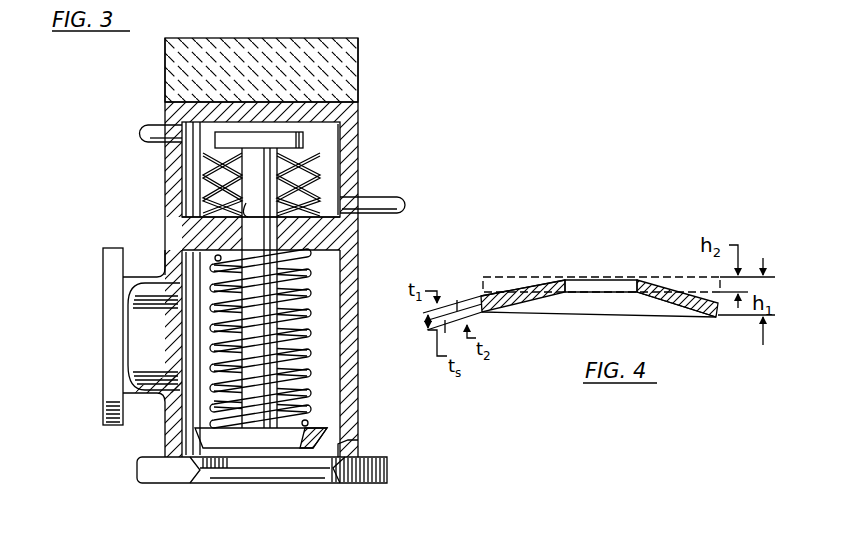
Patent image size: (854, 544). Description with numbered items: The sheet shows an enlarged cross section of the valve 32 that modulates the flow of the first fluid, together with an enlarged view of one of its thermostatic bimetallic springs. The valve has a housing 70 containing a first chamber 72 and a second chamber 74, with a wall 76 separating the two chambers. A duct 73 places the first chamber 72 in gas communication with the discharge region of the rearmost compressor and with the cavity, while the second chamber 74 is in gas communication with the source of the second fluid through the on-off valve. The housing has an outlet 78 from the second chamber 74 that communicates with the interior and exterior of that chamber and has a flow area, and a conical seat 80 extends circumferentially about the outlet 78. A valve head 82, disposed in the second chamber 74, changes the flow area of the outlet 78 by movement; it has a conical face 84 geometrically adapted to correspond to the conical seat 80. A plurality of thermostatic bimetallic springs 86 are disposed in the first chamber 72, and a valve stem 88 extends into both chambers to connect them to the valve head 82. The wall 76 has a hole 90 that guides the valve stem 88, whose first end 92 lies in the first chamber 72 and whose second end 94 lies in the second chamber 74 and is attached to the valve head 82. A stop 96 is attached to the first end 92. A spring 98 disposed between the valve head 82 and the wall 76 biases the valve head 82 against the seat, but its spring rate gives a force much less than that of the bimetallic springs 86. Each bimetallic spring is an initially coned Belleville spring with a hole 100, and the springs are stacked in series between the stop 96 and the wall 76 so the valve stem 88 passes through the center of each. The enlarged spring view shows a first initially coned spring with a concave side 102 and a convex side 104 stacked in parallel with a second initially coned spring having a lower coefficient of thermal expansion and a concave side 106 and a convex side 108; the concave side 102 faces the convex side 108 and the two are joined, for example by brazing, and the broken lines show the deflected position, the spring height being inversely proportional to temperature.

In FIG. 3, the valve 32 is at (364, 246).
In FIG. 3, the housing 70 is at (362, 125).
In FIG. 3, the first chamber 72 is at (333, 157).
In FIG. 3, the duct 73 is at (160, 128).
In FIG. 3, the second chamber 74 is at (330, 338).
In FIG. 3, the wall 76 is at (322, 238).
In FIG. 3, the outlet 78 is at (251, 477).
In FIG. 3, the conical seat 80 is at (284, 469).
In FIG. 3, the valve head 82 is at (312, 425).
In FIG. 3, the conical face 84 is at (261, 434).
In FIG. 3, the thermostatic bimetallic springs 86 is at (341, 181).
In FIG. 3, the valve stem 88 is at (263, 248).
In FIG. 3, the hole 90 is at (253, 204).
In FIG. 3, the first end 92 is at (263, 173).
In FIG. 3, the second end 94 is at (261, 406).
In FIG. 3, the stop 96 is at (303, 140).
In FIG. 3, the spring 98 is at (300, 318).
In FIG. 3, the hole 100 is at (240, 184).
In FIG. 4, the hole 100 is at (597, 281).
In FIG. 4, the concave side 102 is at (520, 300).
In FIG. 4, the convex side 104 is at (534, 288).
In FIG. 4, the concave side 106 is at (647, 288).
In FIG. 4, the convex side 108 is at (690, 301).